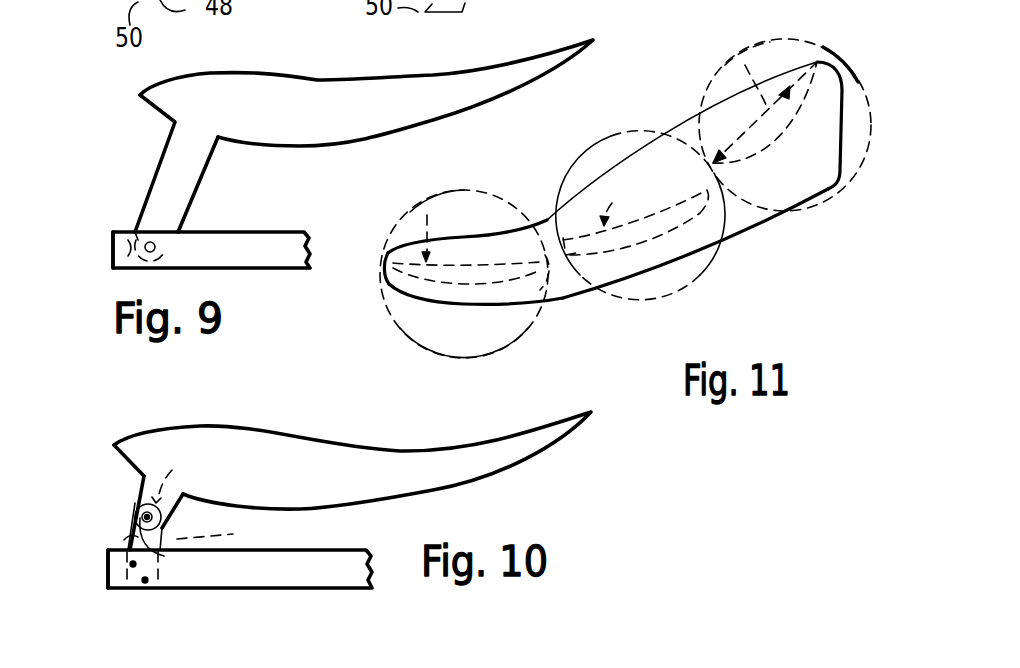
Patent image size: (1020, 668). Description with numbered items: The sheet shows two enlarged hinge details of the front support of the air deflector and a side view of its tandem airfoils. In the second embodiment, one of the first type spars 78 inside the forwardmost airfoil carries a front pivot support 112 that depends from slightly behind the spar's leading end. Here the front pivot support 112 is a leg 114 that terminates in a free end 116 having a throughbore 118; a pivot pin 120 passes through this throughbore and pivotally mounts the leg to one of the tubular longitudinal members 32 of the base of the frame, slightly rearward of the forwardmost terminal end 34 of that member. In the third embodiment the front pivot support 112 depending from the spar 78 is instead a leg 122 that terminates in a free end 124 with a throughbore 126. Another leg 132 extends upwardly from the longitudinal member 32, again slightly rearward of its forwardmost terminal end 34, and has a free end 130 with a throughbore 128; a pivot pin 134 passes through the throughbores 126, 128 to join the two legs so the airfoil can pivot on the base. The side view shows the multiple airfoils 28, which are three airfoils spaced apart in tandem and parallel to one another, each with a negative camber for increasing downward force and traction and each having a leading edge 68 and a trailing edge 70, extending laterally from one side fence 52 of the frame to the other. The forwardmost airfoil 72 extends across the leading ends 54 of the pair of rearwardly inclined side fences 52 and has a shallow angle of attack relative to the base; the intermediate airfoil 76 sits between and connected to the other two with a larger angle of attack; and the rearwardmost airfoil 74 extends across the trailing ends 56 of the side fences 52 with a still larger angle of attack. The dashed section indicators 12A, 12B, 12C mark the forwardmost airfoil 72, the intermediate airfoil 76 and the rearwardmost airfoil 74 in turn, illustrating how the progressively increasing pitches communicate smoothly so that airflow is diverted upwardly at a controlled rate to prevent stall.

In FIG. 9, the first type spars 78 is at (312, 93).
In FIG. 10, the first type spars 78 is at (310, 456).
In FIG. 9, the front pivot support 112 is at (170, 137).
In FIG. 10, the front pivot support 112 is at (137, 504).
In FIG. 9, the leg 114 is at (165, 187).
In FIG. 9, the free end 116 is at (108, 250).
In FIG. 9, the throughbore 118 is at (137, 222).
In FIG. 9, the pivot pin 120 is at (160, 243).
In FIG. 9, the longitudinal members 32 is at (282, 242).
In FIG. 10, the longitudinal members 32 is at (333, 562).
In FIG. 9, the forwardmost terminal ends 34 is at (112, 256).
In FIG. 10, the forwardmost terminal ends 34 is at (108, 562).
In FIG. 10, the leg 122 is at (140, 481).
In FIG. 10, the free end 124 is at (165, 528).
In FIG. 10, the throughbore 126 is at (225, 537).
In FIG. 10, the throughbore 128 is at (124, 524).
In FIG. 10, the free end 130 is at (162, 486).
In FIG. 10, the another leg 132 is at (127, 535).
In FIG. 10, the pivot pin 134 is at (158, 554).
In FIG. 11, the leading ends 54 is at (388, 253).
In FIG. 11, the trailing ends 56 is at (861, 82).
In FIG. 11, the side fences 52 is at (757, 236).
In FIG. 11, the leading edge 68 is at (382, 283).
In FIG. 11, the trailing edge 70 is at (563, 299).
In FIG. 11, the forwardmost airfoil 72 is at (446, 196).
In FIG. 11, the rearwardmost airfoil 74 is at (734, 56).
In FIG. 11, the intermediate airfoil 76 is at (621, 198).
In FIG. 11, the multiple airfoils 28 is at (467, 258).
In FIG. 11, the toe section 12A is at (530, 350).
In FIG. 11, the middle section 12B is at (716, 294).
In FIG. 11, the heel section 12C is at (852, 204).